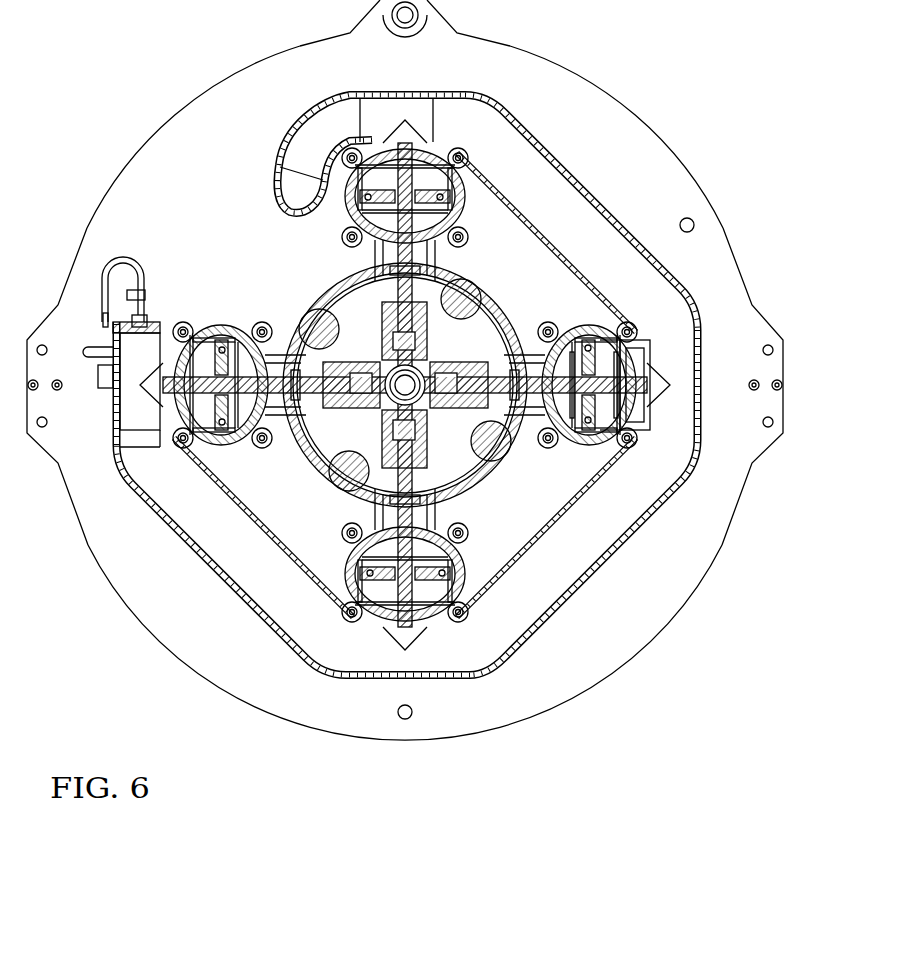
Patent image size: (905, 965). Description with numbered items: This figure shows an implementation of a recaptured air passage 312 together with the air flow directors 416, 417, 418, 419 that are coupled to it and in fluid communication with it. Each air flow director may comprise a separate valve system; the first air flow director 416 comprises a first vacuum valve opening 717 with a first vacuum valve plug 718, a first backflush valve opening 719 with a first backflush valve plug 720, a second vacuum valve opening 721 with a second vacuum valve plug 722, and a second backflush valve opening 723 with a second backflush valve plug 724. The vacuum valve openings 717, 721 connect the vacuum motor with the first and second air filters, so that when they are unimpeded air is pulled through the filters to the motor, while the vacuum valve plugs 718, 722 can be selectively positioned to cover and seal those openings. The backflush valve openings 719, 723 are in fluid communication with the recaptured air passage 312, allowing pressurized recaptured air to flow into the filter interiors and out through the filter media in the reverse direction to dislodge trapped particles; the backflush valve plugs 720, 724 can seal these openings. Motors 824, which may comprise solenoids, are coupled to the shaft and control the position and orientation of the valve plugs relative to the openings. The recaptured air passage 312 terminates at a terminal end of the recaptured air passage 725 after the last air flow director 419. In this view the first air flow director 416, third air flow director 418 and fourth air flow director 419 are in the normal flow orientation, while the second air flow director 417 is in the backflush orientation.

The recaptured air passage 312 is at (322, 103).
The first air flow director 416 is at (532, 142).
The second air flow director 417 is at (650, 430).
The third air flow director 418 is at (455, 626).
The fourth air flow director 419 is at (170, 440).
The first vacuum valve opening 717 is at (378, 241).
The first vacuum valve plug 718 is at (370, 213).
The first backflush valve opening 719 is at (418, 160).
The first backflush valve plug 720 is at (457, 198).
The second vacuum valve opening 721 is at (545, 352).
The second vacuum valve plug 722 is at (560, 342).
The second backflush valve opening 723 is at (640, 371).
The second backflush valve plug 724 is at (636, 333).
The terminal end of the recaptured air passage 725 is at (128, 327).
The motor 824 is at (432, 332).